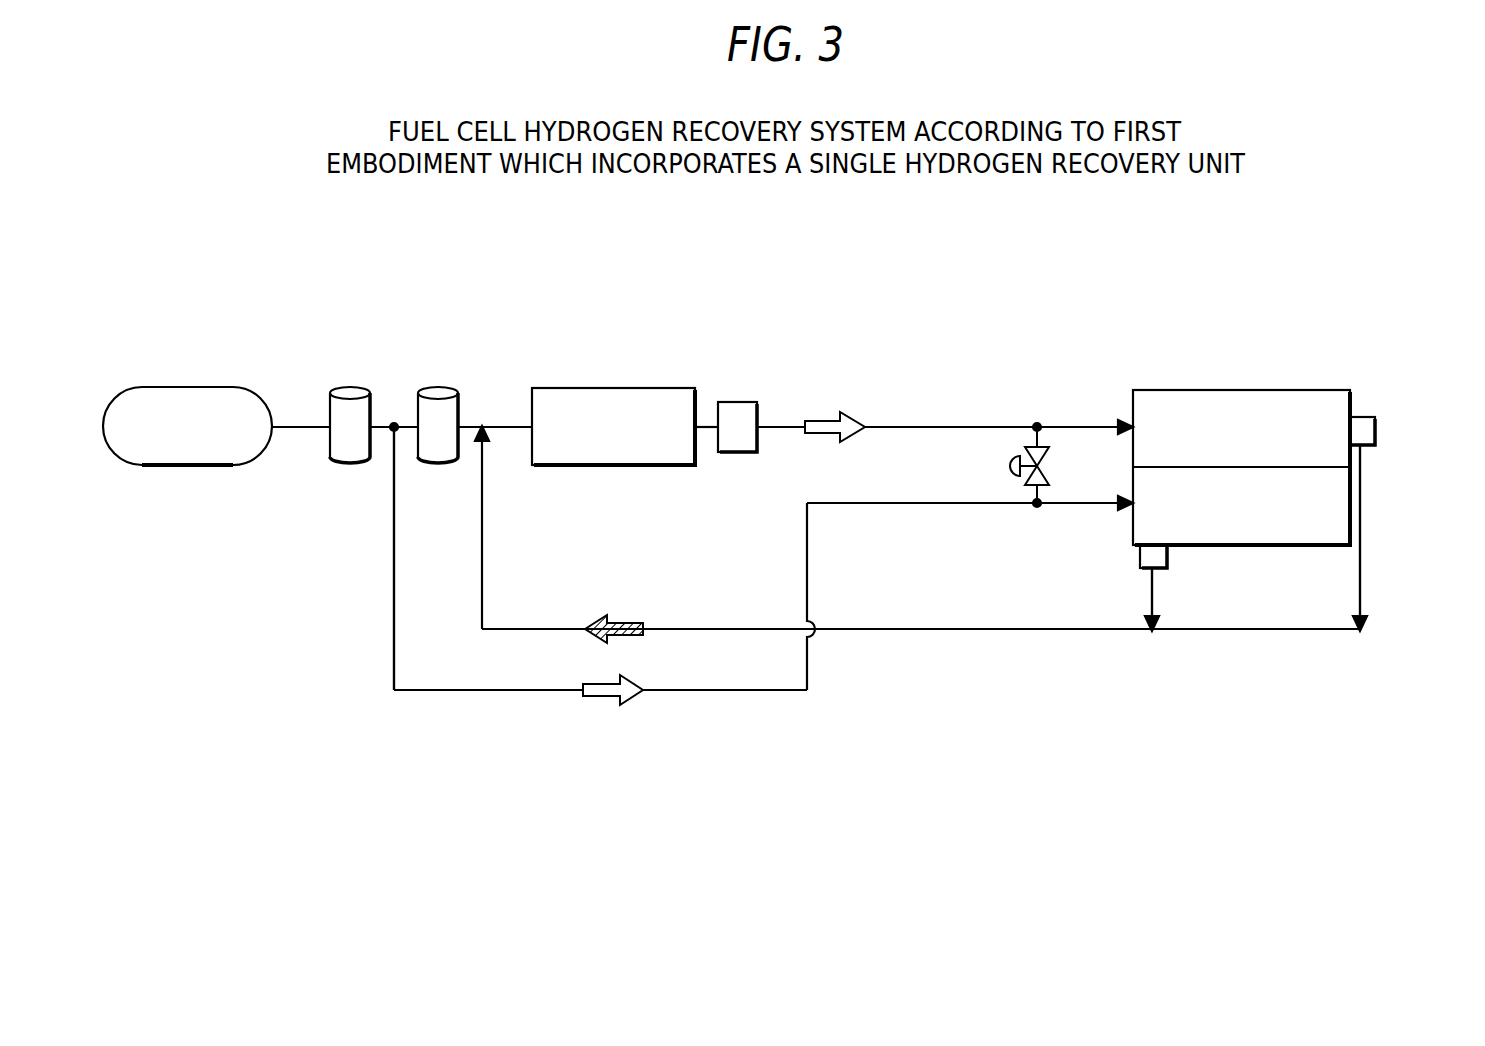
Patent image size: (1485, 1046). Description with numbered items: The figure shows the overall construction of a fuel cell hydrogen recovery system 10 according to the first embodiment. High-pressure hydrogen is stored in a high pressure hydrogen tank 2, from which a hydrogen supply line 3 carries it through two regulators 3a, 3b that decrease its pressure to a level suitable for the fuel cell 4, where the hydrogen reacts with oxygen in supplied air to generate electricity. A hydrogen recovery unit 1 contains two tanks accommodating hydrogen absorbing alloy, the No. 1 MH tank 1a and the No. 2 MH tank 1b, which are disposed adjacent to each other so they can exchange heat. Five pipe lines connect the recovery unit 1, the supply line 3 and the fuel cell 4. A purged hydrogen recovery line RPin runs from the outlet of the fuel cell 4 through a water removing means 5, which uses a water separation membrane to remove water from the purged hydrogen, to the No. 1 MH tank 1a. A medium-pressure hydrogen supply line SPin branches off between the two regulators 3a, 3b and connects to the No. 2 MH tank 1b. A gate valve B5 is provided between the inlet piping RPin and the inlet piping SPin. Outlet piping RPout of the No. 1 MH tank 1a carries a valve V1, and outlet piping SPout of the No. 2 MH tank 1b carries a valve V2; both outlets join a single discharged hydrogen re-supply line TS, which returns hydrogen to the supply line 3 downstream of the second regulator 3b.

The hydrogen recovery unit 1 is at (1261, 457).
The No. 1 MH tank 1a is at (1240, 389).
The No. 2 MH tank 1b is at (1240, 546).
The high pressure hydrogen tank 2 is at (188, 388).
The hydrogen supply line 3 is at (302, 426).
The regulator 3a is at (354, 387).
The regulator 3b is at (442, 387).
The fuel cell 4 is at (613, 388).
The water removing means 5 is at (737, 452).
The fuel cell hydrogen recovery system 10 is at (514, 306).
The gate valve B5 is at (1010, 466).
The valve V1 is at (1378, 432).
The valve V2 is at (1140, 560).
The purged hydrogen recovery line RPin is at (1000, 406).
The outlet piping RPout is at (1367, 615).
The medium-pressure hydrogen supply line SPin is at (393, 561).
The outlet piping SPout is at (1150, 600).
The discharged hydrogen re-supply line TS is at (980, 628).